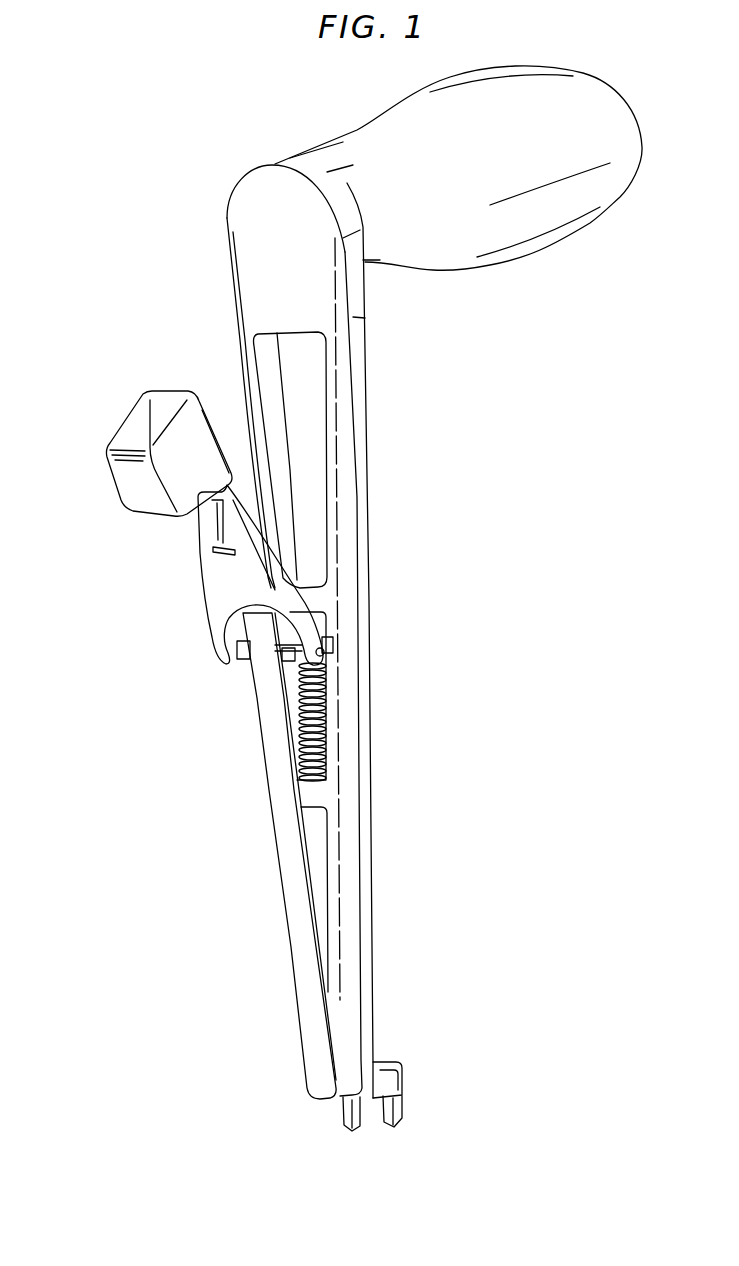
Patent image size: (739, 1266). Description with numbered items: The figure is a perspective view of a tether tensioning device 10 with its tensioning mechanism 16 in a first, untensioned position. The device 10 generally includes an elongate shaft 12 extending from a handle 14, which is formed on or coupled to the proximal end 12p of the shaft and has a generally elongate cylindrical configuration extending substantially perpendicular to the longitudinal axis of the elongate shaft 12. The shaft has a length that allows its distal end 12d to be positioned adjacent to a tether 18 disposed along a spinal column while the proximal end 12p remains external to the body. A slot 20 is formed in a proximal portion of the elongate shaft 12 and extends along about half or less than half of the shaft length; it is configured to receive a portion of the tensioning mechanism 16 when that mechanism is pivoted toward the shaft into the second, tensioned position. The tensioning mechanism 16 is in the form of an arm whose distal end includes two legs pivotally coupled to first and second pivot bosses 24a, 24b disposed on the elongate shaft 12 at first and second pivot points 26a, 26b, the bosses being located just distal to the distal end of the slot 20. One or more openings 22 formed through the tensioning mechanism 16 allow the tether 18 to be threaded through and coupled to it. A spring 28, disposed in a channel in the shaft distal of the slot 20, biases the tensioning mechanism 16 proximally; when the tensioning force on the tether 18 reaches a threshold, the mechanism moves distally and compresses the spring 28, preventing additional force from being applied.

The tether tensioning device 10 is at (97, 154).
The elongate shaft 12 is at (365, 470).
The proximal end 12p is at (160, 213).
The distal end 12d is at (245, 1078).
The handle 14 is at (593, 222).
The tensioning mechanism 16 is at (108, 480).
The tether 18 is at (267, 763).
The slot 20 is at (313, 493).
The openings 22 is at (207, 553).
The first pivot boss 24a is at (240, 655).
The second pivot boss 24b is at (335, 645).
The first pivot point 26a is at (218, 638).
The second pivot point 26b is at (324, 655).
The spring 28 is at (326, 735).